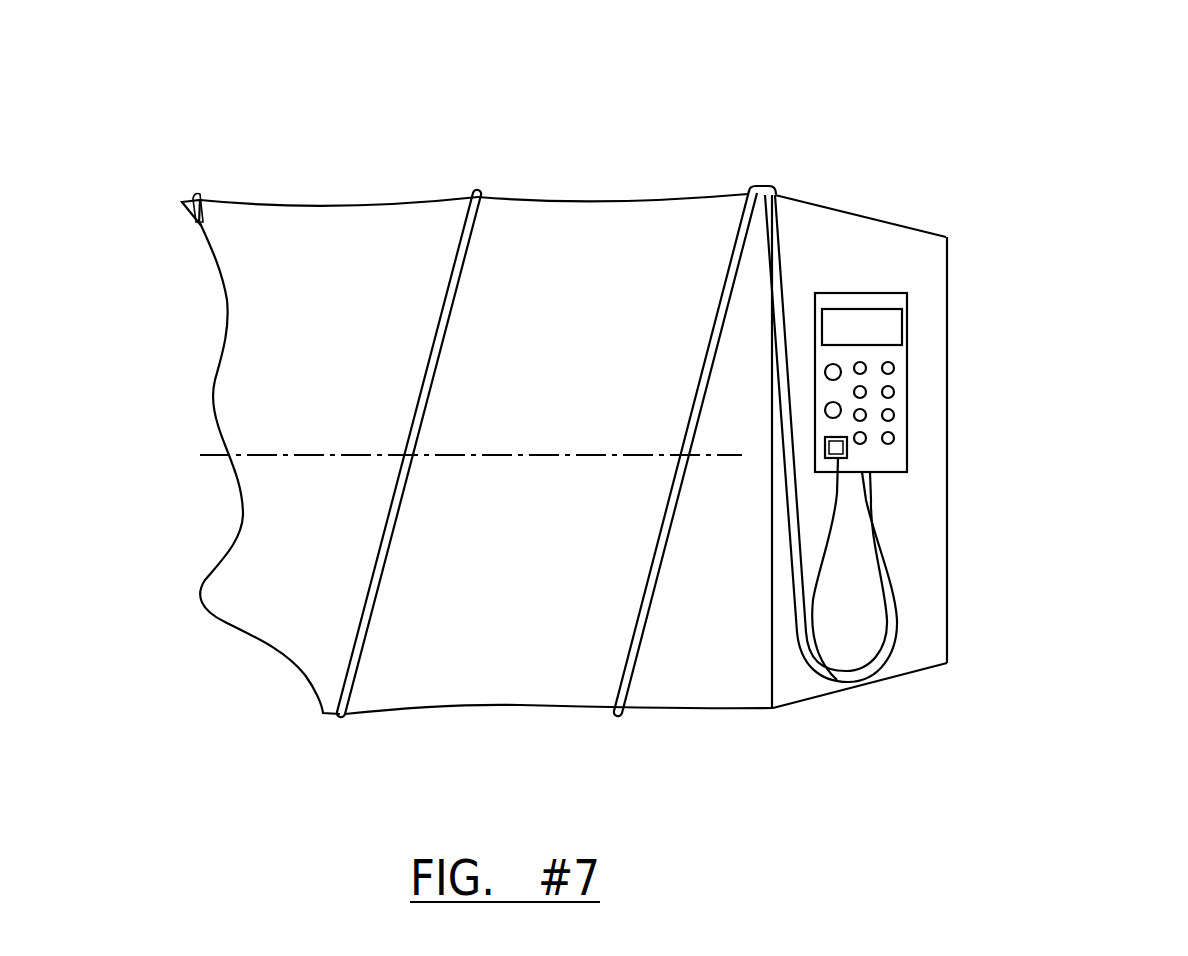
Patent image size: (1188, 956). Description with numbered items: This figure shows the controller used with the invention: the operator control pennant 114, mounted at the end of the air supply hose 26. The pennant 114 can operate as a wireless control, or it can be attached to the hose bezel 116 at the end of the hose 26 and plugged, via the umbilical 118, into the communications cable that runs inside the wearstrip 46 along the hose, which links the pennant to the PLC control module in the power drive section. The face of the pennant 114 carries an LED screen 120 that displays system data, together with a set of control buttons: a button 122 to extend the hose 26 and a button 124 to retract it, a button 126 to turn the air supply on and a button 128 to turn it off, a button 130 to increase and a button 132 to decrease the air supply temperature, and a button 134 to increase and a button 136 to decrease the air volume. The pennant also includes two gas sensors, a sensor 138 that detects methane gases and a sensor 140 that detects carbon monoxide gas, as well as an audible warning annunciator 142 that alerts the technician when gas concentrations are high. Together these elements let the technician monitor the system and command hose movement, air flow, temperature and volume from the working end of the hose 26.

The air supply hose 26 is at (563, 198).
The wearstrip 46 is at (477, 191).
The hose bezel 116 is at (833, 208).
The operator control pennant 114 is at (868, 260).
The umbilical 118 is at (877, 673).
The LED screen 120 is at (890, 300).
The button to extend hose 122 is at (866, 362).
The button to retract hose 124 is at (893, 364).
The button to turn on air supply 126 is at (866, 388).
The button to turn off air supply 128 is at (894, 392).
The button to increase air supply temperature 130 is at (866, 411).
The button to decrease air supply temperature 132 is at (894, 416).
The button to increase air volume 134 is at (866, 434).
The button to decrease air volume 136 is at (894, 441).
The sensor to detect methane gasses 138 is at (825, 414).
The sensor to detect carbon monoxide gas 140 is at (824, 377).
The audible warning annunciator 142 is at (813, 662).